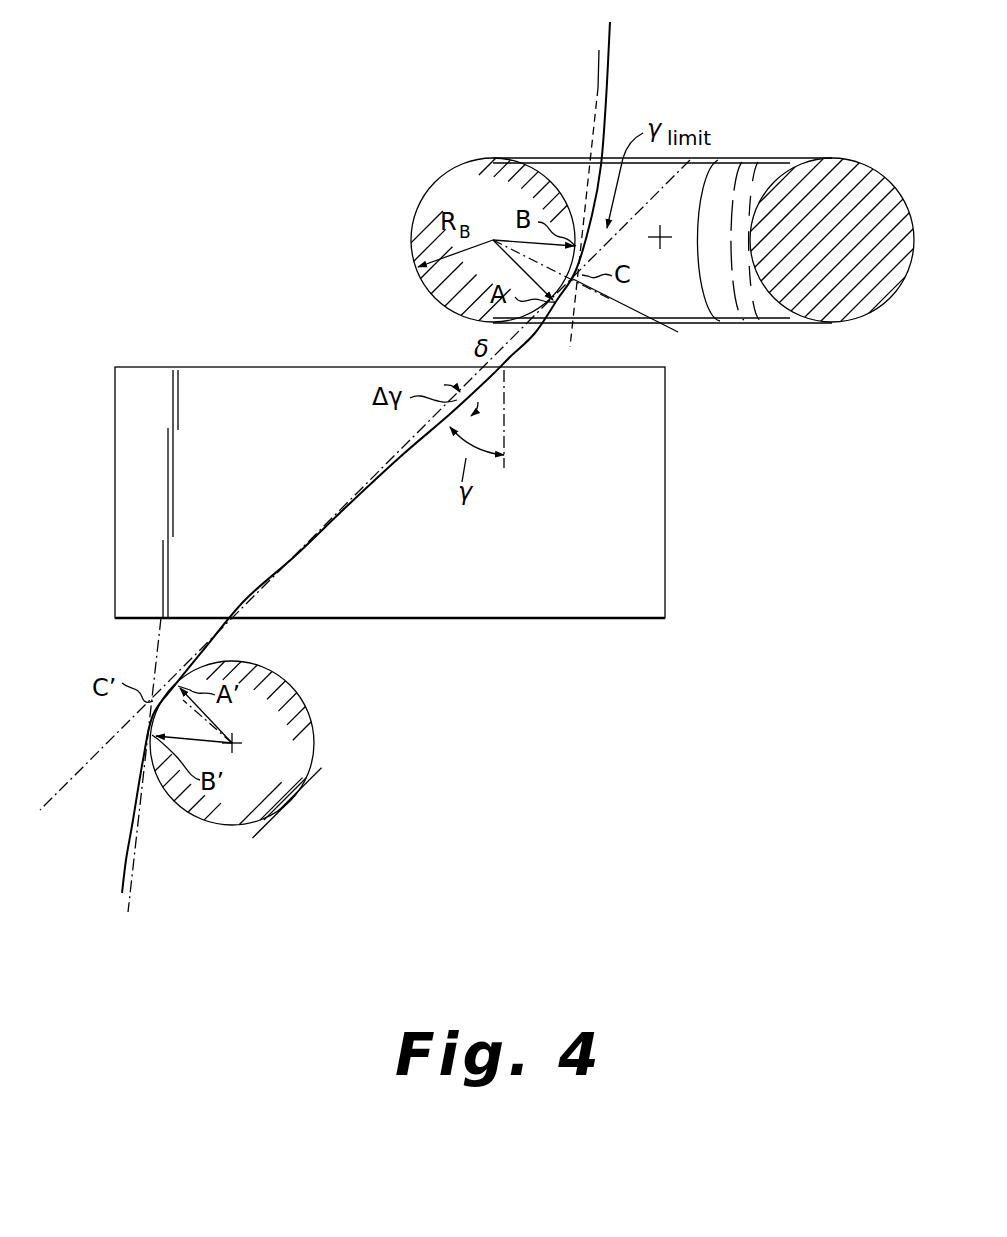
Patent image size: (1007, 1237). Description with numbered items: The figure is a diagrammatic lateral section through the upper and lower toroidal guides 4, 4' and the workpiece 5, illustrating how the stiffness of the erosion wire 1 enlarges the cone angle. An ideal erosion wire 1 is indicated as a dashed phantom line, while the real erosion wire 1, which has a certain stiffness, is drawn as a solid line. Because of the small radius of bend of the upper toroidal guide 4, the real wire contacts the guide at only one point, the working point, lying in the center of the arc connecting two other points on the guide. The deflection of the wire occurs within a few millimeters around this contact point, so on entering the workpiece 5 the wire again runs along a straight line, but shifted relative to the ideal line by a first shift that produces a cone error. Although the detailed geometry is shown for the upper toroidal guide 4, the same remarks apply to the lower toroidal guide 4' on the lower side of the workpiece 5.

The erosion wire 1 is at (645, 68).
The upper toroidal guide 4 is at (662, 185).
The lower toroidal guide 4' is at (249, 783).
The workpiece 5 is at (190, 352).